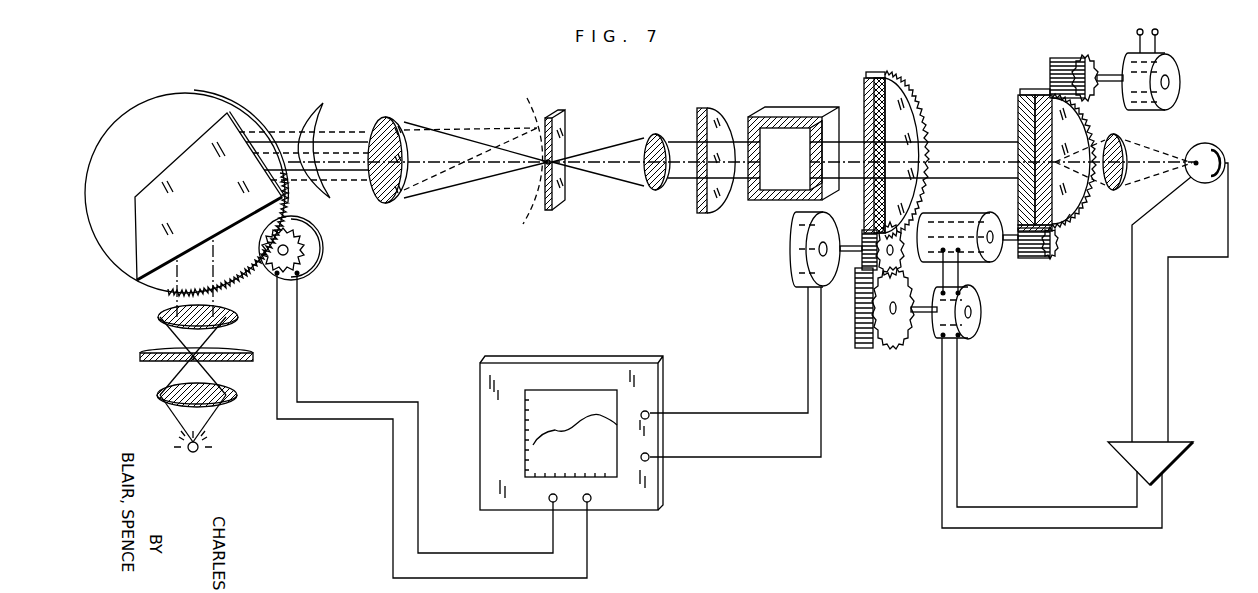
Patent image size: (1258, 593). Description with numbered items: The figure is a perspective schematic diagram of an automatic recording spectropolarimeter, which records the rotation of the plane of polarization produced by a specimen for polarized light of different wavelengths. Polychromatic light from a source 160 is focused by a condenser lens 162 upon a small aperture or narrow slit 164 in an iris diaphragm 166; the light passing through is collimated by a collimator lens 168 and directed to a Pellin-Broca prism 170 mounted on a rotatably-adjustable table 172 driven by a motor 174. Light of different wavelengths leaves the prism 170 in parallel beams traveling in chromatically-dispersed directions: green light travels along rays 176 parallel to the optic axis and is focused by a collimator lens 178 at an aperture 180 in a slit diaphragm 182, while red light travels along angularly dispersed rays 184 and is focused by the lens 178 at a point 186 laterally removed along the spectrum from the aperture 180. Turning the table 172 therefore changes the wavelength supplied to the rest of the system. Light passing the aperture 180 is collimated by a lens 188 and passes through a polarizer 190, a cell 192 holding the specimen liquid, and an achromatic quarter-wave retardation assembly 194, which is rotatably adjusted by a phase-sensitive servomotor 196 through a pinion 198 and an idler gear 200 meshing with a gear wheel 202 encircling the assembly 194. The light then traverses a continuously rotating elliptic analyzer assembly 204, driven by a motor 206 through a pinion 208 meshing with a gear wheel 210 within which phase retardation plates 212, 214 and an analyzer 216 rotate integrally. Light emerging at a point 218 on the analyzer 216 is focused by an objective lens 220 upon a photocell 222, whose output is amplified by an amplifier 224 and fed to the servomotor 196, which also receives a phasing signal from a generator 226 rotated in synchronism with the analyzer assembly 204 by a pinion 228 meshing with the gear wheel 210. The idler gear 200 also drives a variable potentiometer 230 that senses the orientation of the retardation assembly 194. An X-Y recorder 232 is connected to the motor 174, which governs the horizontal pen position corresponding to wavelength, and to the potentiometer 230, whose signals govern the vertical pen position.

The source 160 is at (195, 453).
The condenser lens 162 is at (164, 391).
The aperture 164 is at (190, 359).
The iris diaphragm 166 is at (153, 351).
The collimator lens 168 is at (160, 316).
The Pellin-Broca prism 170 is at (213, 195).
The rotatably-adjustable table 172 is at (150, 138).
The motor 174 is at (306, 268).
The rays 176 is at (330, 197).
The collimator lens 178 is at (397, 119).
The aperture 180 is at (545, 165).
The slit diaphragm 182 is at (562, 142).
The rays 184 is at (322, 150).
The point 186 is at (535, 127).
The lens 188 is at (645, 186).
The polarizer 190 is at (697, 193).
The cell 192 is at (780, 200).
The achromatic quarter-wave retardation assembly 194 is at (862, 96).
The phase-sensitive servomotor 196 is at (976, 323).
The pinion 198 is at (878, 351).
The idler gear 200 is at (863, 279).
The gear wheel 202 is at (883, 74).
The rotating elliptic analyzer assembly 204 is at (1014, 91).
The motor 206 is at (1180, 75).
The pinion 208 is at (1066, 58).
The gear wheel 210 is at (1068, 220).
The phase retardation plate 212 is at (1018, 132).
The phase retardation plate 214 is at (1033, 118).
The analyzer 216 is at (1066, 198).
The point 218 is at (1082, 134).
The objective lens 220 is at (1126, 142).
The photocell 222 is at (1192, 184).
The amplifier 224 is at (1112, 451).
The generator 226 is at (955, 219).
The pinion 228 is at (1036, 260).
The variable potentiometer 230 is at (796, 262).
The X-Y recorder 232 is at (537, 362).